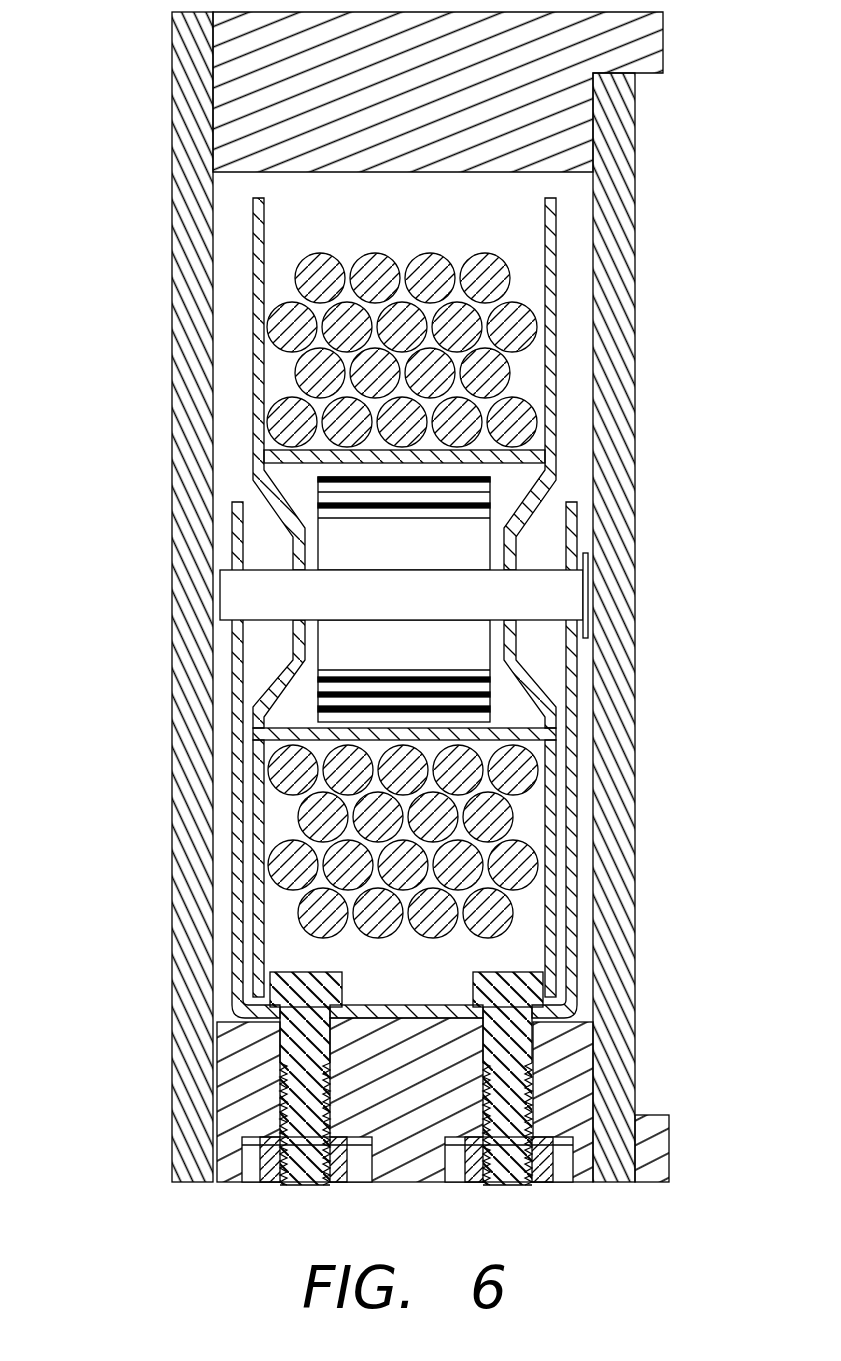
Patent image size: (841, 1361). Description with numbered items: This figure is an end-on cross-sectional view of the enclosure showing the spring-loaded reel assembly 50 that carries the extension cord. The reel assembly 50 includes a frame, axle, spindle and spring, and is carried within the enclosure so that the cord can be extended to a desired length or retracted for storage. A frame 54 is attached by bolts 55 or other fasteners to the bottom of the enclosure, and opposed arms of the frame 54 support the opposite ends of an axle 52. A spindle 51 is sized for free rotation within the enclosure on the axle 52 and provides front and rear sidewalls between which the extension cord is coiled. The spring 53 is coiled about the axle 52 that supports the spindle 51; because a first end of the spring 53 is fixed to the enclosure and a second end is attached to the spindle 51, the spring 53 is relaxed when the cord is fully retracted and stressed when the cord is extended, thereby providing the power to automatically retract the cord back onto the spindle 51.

The spring-loaded reel assembly 50 is at (235, 365).
The spindle 51 is at (562, 327).
The axle 52 is at (553, 596).
The spring 53 is at (438, 522).
The frame 54 is at (230, 740).
The bolts 55 is at (507, 967).